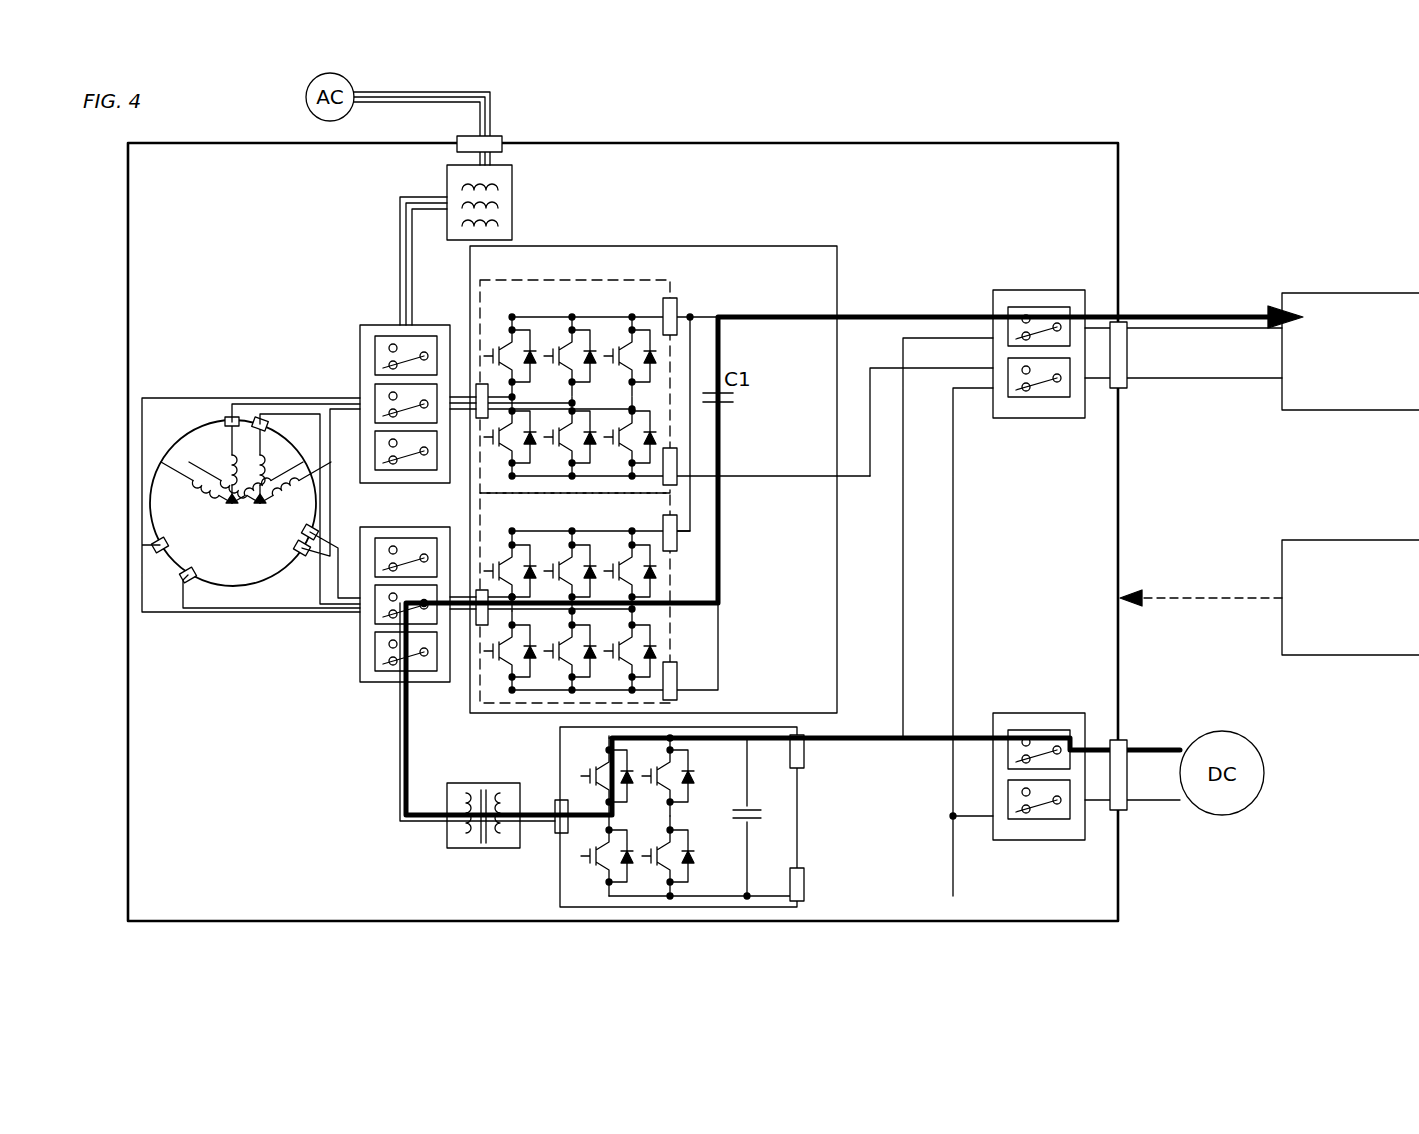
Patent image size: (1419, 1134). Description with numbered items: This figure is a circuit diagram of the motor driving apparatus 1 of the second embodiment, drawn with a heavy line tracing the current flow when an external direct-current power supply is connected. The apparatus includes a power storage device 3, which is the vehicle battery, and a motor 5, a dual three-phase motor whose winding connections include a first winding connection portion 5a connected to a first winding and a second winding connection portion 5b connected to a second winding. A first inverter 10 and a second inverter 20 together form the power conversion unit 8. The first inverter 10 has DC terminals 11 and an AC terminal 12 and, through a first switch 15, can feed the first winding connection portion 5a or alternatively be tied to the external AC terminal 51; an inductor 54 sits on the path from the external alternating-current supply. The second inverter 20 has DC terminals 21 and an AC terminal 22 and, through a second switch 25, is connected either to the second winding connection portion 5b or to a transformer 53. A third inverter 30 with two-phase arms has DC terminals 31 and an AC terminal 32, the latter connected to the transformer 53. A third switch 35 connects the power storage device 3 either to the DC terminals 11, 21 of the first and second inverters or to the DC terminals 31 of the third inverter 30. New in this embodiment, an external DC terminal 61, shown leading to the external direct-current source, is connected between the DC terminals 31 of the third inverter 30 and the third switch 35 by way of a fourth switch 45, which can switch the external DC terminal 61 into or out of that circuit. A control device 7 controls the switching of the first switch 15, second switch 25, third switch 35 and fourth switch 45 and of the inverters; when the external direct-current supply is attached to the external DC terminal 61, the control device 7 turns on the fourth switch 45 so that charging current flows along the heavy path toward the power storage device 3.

The motor driving apparatus 1 is at (1163, 126).
The power storage device 3 is at (1363, 293).
The motor 5 is at (160, 562).
The first winding connection portion 5a is at (230, 416).
The second winding connection portion 5b is at (264, 418).
The control device 7 is at (1360, 540).
The power conversion unit 8 is at (838, 284).
The first inverter 10 is at (612, 280).
The DC terminals 11 is at (679, 302).
The AC terminal 12 is at (481, 384).
The first switch 15 is at (381, 325).
The second inverter 20 is at (516, 713).
The DC terminals 21 is at (680, 541).
The AC terminal 22 is at (481, 626).
The second switch 25 is at (378, 683).
The third inverter 30 is at (706, 908).
The DC terminals 31 is at (805, 752).
The AC terminal 32 is at (558, 835).
The third switch 35 is at (1042, 290).
The fourth switch 45 is at (1045, 713).
The external AC terminal 51 is at (495, 133).
The transformer 53 is at (484, 850).
The inductor 54 is at (513, 203).
The external DC terminal 61 is at (1128, 770).